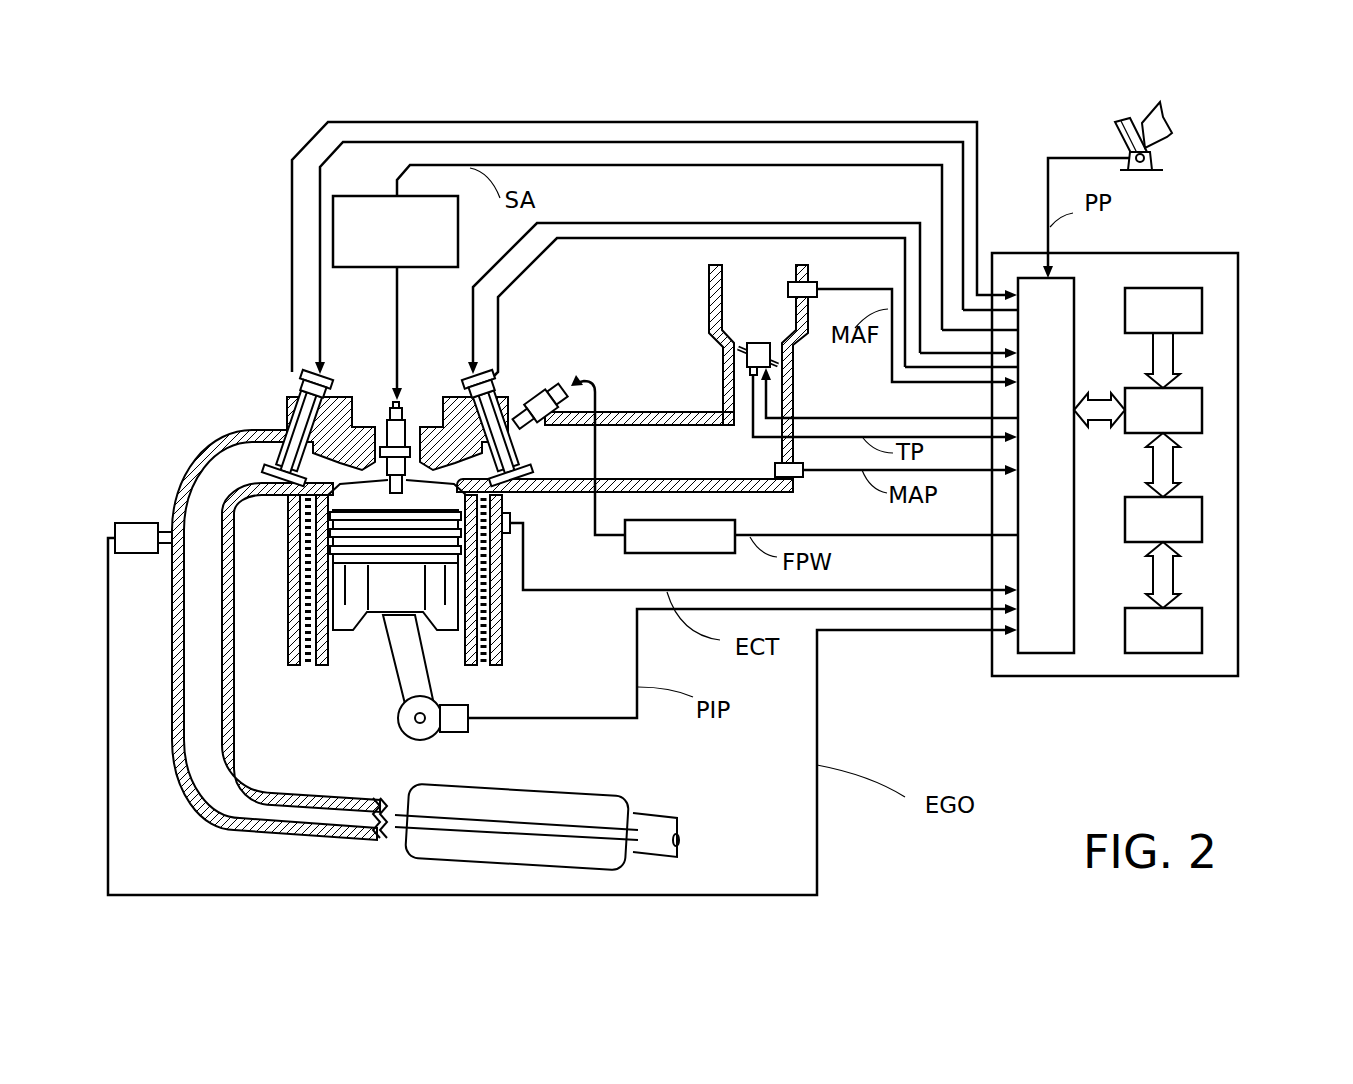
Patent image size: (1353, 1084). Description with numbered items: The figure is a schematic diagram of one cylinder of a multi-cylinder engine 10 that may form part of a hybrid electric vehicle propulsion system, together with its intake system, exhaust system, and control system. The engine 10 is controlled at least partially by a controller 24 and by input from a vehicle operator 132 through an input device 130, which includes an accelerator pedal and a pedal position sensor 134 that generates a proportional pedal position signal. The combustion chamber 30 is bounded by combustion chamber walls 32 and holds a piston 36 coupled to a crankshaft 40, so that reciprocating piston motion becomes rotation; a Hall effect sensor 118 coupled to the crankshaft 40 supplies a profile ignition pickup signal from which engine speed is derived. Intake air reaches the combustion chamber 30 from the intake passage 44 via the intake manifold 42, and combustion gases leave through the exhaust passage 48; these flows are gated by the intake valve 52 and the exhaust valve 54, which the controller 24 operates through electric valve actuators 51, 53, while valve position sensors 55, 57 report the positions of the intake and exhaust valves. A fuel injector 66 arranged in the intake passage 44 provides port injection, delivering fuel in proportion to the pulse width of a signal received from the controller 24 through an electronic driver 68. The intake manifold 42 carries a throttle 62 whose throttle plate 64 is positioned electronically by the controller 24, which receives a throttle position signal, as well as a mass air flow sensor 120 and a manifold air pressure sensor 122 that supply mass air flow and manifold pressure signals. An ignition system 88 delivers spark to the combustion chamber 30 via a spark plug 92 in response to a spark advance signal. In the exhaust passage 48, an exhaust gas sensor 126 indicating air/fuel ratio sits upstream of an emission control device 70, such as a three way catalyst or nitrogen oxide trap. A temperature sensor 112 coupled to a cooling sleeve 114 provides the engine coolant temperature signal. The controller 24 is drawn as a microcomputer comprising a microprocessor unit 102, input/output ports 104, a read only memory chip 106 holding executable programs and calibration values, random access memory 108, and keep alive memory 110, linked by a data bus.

The engine 10 is at (210, 343).
The controller 24 is at (1230, 253).
The combustion chamber 30 is at (393, 503).
The combustion chamber walls 32 is at (330, 650).
The piston 36 is at (397, 603).
The crankshaft 40 is at (408, 740).
The intake manifold 42 is at (745, 317).
The intake passage 44 is at (627, 467).
The exhaust passage 48 is at (240, 475).
The electric valve actuator 51 is at (457, 370).
The intake valve 52 is at (455, 478).
The electric valve actuator 53 is at (335, 370).
The exhaust valve 54 is at (345, 477).
The valve position sensor 55 is at (492, 383).
The valve position sensor 57 is at (303, 382).
The throttle 62 is at (770, 348).
The throttle plate 64 is at (735, 348).
The fuel injector 66 is at (543, 390).
The electronic driver 68 is at (657, 553).
The emission control device 70 is at (588, 790).
The ignition system 88 is at (347, 196).
The spark plug 92 is at (410, 405).
The microprocessor unit 102 is at (1202, 405).
The input/output ports 104 is at (1075, 288).
The read only memory chip 106 is at (1202, 310).
The random access memory 108 is at (1202, 517).
The keep alive memory 110 is at (1202, 627).
The temperature sensor 112 is at (512, 528).
The cooling sleeve 114 is at (503, 613).
The Hall effect sensor 118 is at (458, 733).
The mass air flow sensor 120 is at (812, 281).
The manifold air pressure sensor 122 is at (800, 480).
The exhaust gas sensor 126 is at (115, 525).
The input device 130 is at (1120, 133).
The vehicle operator 132 is at (1170, 118).
The pedal position sensor 134 is at (1152, 158).